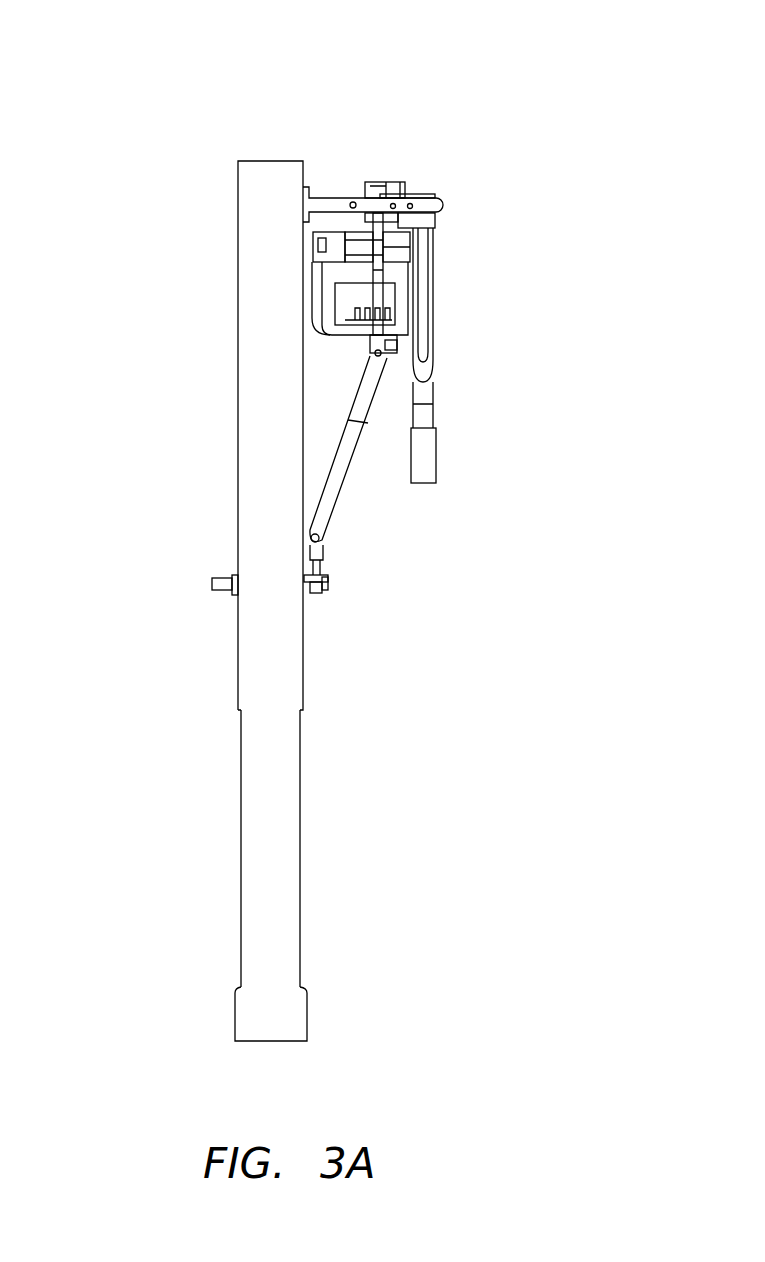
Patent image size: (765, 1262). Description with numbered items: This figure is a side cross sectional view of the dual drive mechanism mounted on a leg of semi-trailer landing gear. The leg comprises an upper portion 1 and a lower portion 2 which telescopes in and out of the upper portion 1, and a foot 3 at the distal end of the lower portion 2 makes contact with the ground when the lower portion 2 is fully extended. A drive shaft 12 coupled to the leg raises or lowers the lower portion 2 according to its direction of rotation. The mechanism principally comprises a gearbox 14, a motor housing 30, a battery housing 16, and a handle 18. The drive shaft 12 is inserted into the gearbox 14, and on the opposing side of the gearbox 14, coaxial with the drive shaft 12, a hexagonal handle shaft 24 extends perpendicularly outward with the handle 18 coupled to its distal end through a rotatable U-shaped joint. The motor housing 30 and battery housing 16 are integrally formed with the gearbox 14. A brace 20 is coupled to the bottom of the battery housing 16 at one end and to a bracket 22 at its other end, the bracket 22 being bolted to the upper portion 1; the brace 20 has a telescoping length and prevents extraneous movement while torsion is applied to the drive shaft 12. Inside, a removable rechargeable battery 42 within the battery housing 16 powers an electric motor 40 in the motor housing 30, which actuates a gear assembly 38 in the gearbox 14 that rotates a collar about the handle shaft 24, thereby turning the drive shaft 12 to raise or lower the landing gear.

The upper portion 1 is at (260, 635).
The lower portion 2 is at (275, 843).
The foot 3 is at (260, 1015).
The drive shaft 12 is at (330, 198).
The gearbox 14 is at (396, 182).
The battery housing 16 is at (338, 337).
The handle 18 is at (432, 372).
The brace 20 is at (368, 422).
The bracket 22 is at (330, 578).
The handle shaft 24 is at (437, 200).
The motor housing 30 is at (310, 263).
The gear assembly 38 is at (425, 222).
The motor 40 is at (312, 240).
The battery 42 is at (347, 352).